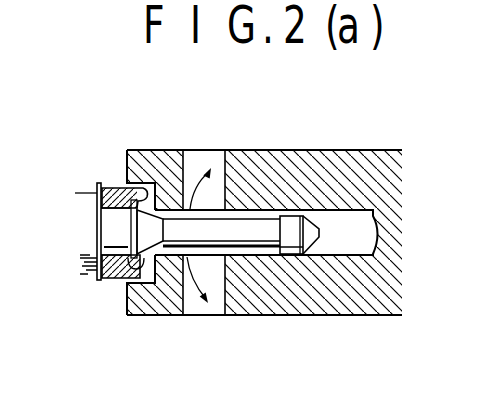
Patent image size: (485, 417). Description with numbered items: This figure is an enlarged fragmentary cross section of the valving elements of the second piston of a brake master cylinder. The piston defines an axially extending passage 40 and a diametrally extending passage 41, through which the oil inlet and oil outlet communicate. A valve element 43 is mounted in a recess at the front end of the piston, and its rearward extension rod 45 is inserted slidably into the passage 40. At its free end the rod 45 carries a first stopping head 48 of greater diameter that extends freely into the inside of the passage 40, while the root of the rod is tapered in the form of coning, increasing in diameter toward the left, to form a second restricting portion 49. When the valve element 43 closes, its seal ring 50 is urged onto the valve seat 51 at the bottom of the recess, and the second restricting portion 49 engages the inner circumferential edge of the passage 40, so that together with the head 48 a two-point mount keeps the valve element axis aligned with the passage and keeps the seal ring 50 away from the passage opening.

The passage 40 is at (252, 259).
The passage 41 is at (222, 149).
The valve element 43 is at (80, 282).
The rearward extension rod 45 is at (253, 224).
The first stopping head 48 is at (298, 316).
The second restricting portion 49 is at (143, 246).
The seal ring 50 is at (113, 280).
The valve seat 51 is at (153, 150).